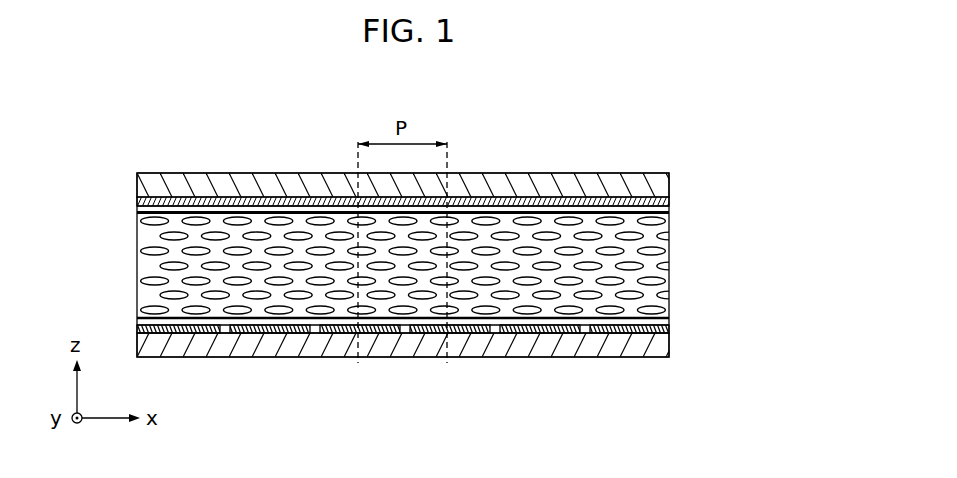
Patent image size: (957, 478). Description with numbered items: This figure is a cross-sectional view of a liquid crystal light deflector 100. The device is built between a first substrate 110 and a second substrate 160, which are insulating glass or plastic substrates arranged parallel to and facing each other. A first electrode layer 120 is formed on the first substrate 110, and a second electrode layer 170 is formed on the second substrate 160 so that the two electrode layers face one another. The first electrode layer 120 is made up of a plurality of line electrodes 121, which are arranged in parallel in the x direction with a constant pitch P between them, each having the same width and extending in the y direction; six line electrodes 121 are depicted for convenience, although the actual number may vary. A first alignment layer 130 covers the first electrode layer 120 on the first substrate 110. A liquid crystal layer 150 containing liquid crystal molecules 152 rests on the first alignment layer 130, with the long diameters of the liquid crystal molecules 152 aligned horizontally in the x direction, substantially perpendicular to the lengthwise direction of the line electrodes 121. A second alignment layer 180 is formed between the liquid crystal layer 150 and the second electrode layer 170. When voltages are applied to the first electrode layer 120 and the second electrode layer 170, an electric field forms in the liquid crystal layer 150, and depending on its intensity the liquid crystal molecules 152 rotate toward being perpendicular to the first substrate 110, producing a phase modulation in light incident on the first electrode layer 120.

The liquid crystal light deflector 100 is at (626, 157).
The first substrate 110 is at (660, 345).
The first electrode layer 120 is at (451, 372).
The line electrodes 121 is at (548, 333).
The first alignment layer 130 is at (670, 321).
The liquid crystal layer 150 is at (441, 318).
The liquid crystal molecules 152 is at (278, 313).
The second substrate 160 is at (670, 185).
The second electrode layer 170 is at (670, 203).
The second alignment layer 180 is at (670, 211).